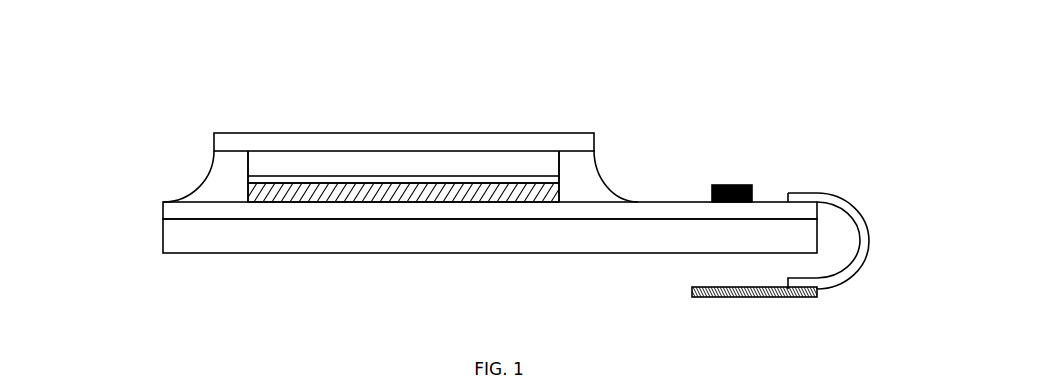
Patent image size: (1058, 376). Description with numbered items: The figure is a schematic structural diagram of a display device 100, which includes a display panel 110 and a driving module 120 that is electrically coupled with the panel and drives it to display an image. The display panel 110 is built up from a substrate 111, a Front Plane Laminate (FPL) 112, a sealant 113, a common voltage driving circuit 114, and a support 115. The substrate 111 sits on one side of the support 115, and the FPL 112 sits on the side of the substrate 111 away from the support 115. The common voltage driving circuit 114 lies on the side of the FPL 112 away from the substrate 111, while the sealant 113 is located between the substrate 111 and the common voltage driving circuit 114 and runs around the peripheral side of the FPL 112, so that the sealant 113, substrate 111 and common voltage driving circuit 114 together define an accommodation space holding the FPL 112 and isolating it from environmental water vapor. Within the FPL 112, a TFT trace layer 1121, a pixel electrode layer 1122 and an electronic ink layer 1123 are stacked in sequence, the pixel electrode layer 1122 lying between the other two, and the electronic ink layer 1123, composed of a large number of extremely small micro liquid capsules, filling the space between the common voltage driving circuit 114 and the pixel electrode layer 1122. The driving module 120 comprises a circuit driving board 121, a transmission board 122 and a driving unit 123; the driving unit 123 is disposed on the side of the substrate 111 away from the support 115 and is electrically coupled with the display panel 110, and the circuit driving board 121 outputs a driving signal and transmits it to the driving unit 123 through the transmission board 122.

The display device 100 is at (487, 20).
The display panel 110 is at (88, 37).
The substrate 111 is at (162, 208).
The Front Plane Laminate (FPL) 112 is at (462, 128).
The sealant 113 is at (203, 185).
The common voltage driving circuit 114 is at (215, 135).
The support 115 is at (247, 253).
The driving module 120 is at (928, 248).
The circuit driving board 121 is at (730, 297).
The transmission board 122 is at (858, 212).
The driving unit 123 is at (740, 185).
The TFT trace layer 1121 is at (550, 197).
The pixel electrode layer 1122 is at (540, 183).
The electronic ink layer 1123 is at (523, 157).